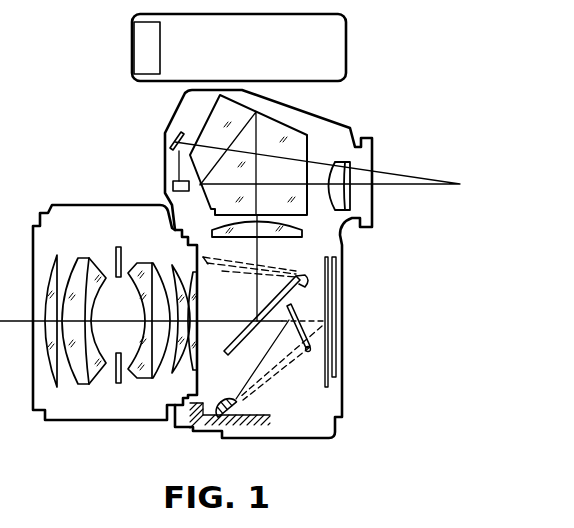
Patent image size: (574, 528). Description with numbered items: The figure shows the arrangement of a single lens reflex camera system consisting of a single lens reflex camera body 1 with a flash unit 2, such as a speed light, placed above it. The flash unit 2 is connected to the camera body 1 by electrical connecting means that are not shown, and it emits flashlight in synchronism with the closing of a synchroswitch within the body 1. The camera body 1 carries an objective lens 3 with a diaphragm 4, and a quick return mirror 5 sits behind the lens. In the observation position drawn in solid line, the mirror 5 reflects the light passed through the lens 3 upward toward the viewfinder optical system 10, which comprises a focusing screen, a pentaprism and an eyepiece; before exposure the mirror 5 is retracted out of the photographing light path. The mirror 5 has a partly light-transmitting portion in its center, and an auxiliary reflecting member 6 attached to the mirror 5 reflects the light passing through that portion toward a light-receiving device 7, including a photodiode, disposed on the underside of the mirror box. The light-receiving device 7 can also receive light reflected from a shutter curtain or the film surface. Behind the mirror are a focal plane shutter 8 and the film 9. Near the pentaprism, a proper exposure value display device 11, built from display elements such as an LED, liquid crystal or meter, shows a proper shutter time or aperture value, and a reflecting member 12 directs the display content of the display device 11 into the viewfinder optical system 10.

The single lens reflex camera body 1 is at (310, 432).
The flash unit 2 is at (336, 49).
The objective lens 3 is at (75, 421).
The diaphragm 4 is at (121, 380).
The quick return mirror 5 is at (233, 342).
The auxiliary reflecting member 6 is at (305, 318).
The light-receiving device 7 is at (218, 400).
The focal plane shutter 8 is at (323, 370).
The film 9 is at (338, 287).
The viewfinder optical system 10 is at (302, 148).
The proper exposure value display device 11 is at (173, 183).
The reflecting member 12 is at (173, 138).